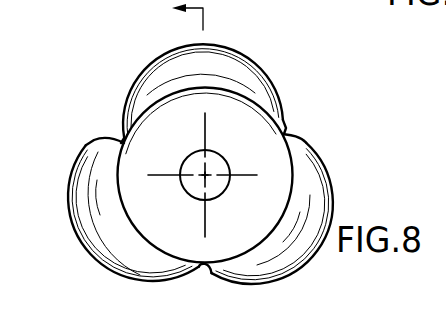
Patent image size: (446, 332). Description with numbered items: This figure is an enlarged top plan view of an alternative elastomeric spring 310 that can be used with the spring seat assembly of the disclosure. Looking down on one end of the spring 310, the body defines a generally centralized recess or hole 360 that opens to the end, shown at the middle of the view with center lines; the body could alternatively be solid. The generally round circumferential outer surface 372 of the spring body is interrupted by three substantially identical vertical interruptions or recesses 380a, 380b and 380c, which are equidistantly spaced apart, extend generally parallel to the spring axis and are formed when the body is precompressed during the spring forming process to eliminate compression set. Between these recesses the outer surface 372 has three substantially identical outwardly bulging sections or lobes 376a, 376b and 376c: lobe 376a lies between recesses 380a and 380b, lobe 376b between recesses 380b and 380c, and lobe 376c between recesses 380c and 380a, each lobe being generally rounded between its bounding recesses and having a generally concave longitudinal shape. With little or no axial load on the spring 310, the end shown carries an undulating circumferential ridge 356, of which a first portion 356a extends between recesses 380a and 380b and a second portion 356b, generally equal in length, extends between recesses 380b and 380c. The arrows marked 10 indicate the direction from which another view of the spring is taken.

The view direction arrow 10 is at (75, 249).
The spring 310 is at (95, 84).
The undulating circumferential ridge 356 is at (150, 239).
The first portion of the circumferential ridge 356a is at (266, 234).
The second portion of the circumferential ridge 356b is at (227, 103).
The centralized recess or hole 360 is at (222, 158).
The circumferential outer surface 372 is at (69, 174).
The outwardly bulging section or lobe 376a is at (276, 276).
The outwardly bulging section or lobe 376b is at (176, 62).
The outwardly bulging section or lobe 376c is at (86, 216).
The vertical interruption or recess 380a is at (191, 270).
The vertical interruption or recess 380b is at (287, 128).
The vertical interruption or recess 380c is at (110, 140).